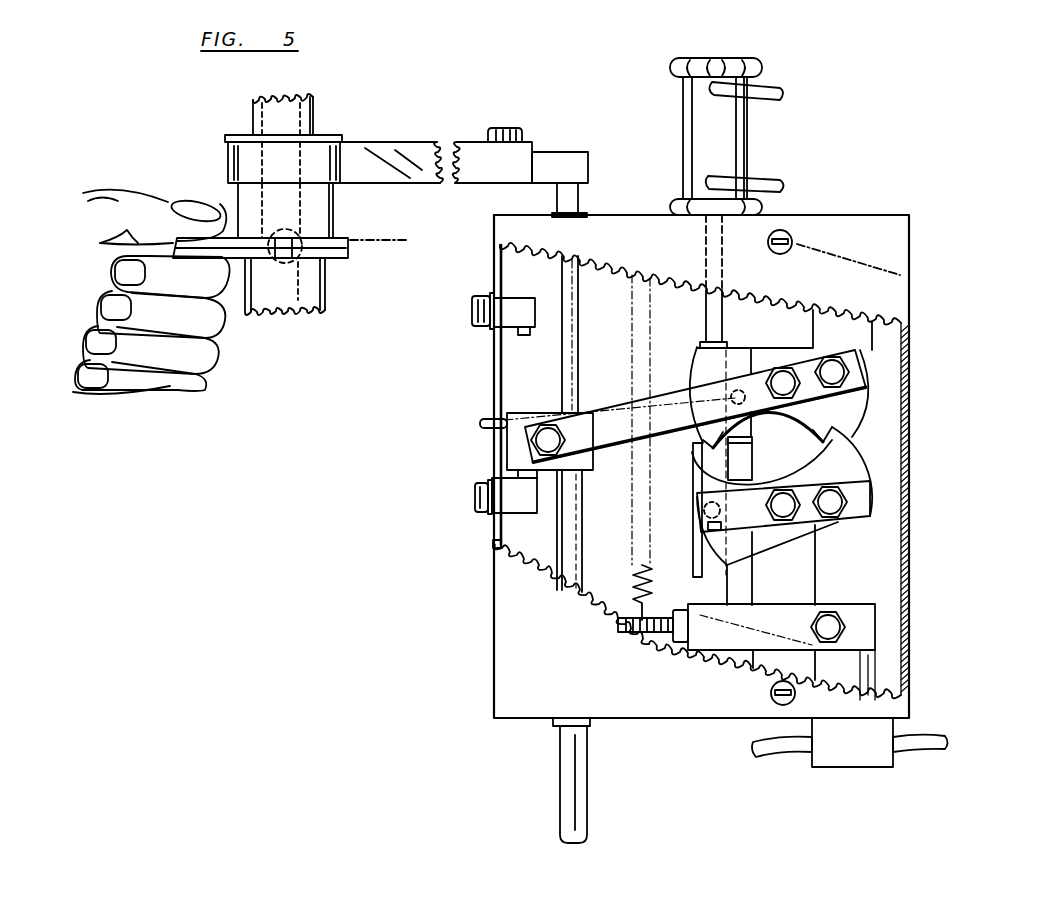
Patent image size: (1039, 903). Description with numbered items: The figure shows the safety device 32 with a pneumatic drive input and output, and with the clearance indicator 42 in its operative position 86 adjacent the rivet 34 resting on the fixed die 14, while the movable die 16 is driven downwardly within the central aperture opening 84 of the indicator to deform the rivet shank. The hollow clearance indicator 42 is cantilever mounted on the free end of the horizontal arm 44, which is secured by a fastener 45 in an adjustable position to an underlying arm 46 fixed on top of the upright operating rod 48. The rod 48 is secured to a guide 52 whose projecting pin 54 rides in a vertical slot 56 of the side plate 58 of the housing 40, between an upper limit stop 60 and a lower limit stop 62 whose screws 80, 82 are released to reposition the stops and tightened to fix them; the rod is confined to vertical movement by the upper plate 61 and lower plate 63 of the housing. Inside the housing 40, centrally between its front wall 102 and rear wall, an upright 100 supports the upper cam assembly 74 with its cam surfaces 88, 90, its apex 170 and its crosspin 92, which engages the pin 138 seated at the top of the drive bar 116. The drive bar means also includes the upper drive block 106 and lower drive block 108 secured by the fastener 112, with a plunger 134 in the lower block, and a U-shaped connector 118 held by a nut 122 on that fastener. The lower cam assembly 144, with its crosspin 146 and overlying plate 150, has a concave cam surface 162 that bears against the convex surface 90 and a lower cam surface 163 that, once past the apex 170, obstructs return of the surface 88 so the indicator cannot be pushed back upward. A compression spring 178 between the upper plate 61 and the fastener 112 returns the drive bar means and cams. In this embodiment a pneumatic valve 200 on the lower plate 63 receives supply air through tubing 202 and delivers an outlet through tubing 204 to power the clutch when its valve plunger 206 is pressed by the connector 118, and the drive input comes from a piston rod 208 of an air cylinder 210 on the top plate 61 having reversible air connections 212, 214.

The fixed die 14 is at (317, 300).
The movable die 16 is at (315, 108).
The safety device 32 is at (912, 200).
The rivet 34 is at (297, 266).
The housing 40 is at (850, 215).
The clearance indicator 42 is at (245, 200).
The arm 44 is at (385, 158).
The fastener 45 is at (508, 128).
The arm 46 is at (567, 162).
The operating rod 48 is at (583, 201).
The guide 52 is at (516, 447).
The pin 54 is at (487, 421).
The vertical slot 56 is at (498, 386).
The side plate 58 is at (496, 546).
The upper limit stop 60 is at (512, 312).
The upper plate 61 is at (501, 216).
The lower limit stop 62 is at (507, 505).
The lower plate 63 is at (627, 722).
The upper cam assembly 74 is at (800, 357).
The screw 80 is at (488, 300).
The screw 82 is at (475, 499).
The central aperture opening 84 is at (323, 188).
The operative position 86 is at (382, 241).
The cam surface 88 is at (800, 437).
The convex cam surface 90 is at (868, 418).
The crosspin 92 is at (731, 398).
The upright 100 is at (775, 665).
The front wall 102 is at (884, 253).
The upper drive block 106 is at (727, 344).
The lower drive block 108 is at (705, 572).
The threaded fastener 112 is at (653, 636).
The drive bar 116 is at (742, 583).
The connector 118 is at (866, 640).
The nut 122 is at (686, 644).
The plunger 134 is at (705, 548).
The pin 138 is at (752, 455).
The lower cam assembly 144 is at (866, 492).
The crosspin 146 is at (703, 510).
The plate 150 is at (872, 512).
The concave cam surface 162 is at (878, 441).
The lower cam surface 163 is at (870, 478).
The cam profile apex 170 is at (890, 440).
The compression spring 178 is at (638, 575).
The pneumatic valve 200 is at (866, 768).
The tubing 202 is at (764, 752).
The tubing 204 is at (915, 752).
The valve plunger 206 is at (876, 674).
The piston rod 208 is at (713, 330).
The air cylinder 210 is at (745, 158).
The air connection 212 is at (780, 84).
The air connection 214 is at (783, 186).